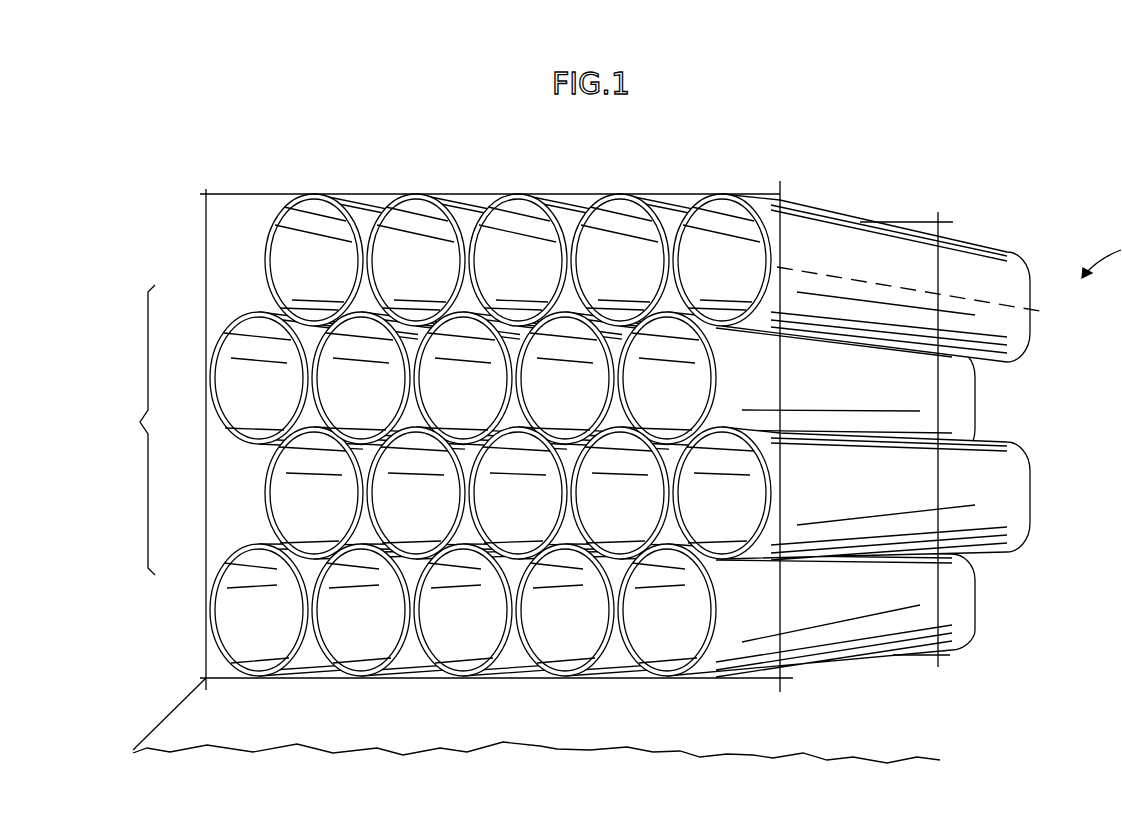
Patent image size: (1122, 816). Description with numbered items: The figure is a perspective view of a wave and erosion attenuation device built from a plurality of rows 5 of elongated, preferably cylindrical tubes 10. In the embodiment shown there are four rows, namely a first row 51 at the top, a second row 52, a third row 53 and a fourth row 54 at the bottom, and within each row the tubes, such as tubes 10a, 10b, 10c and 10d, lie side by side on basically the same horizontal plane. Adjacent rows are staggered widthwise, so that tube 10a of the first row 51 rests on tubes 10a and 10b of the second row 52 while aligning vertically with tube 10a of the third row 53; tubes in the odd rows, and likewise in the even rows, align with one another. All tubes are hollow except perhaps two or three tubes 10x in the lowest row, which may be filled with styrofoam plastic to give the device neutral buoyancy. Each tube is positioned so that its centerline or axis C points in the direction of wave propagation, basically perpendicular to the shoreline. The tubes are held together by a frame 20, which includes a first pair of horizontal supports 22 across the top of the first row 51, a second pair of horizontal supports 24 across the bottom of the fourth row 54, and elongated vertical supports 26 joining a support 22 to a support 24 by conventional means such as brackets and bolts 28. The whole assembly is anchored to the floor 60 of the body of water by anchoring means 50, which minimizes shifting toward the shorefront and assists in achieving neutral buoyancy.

The rows 5 is at (139, 430).
The tubes 10 is at (412, 155).
The tube 10a is at (338, 201).
The tube 10b is at (428, 199).
The tube 10c is at (529, 199).
The tube 10d is at (628, 199).
The tubes 10x is at (364, 676).
The frame 20 is at (243, 190).
The horizontal supports 22 is at (274, 194).
The horizontal supports 24 is at (752, 680).
The vertical supports 26 is at (783, 373).
The brackets and bolts 28 is at (206, 192).
The anchoring means 50 is at (163, 724).
The first row 51 is at (264, 262).
The second row 52 is at (209, 362).
The third row 53 is at (262, 488).
The fourth row 54 is at (206, 592).
The floor 60 is at (755, 759).
The centerline or axis C is at (1040, 311).